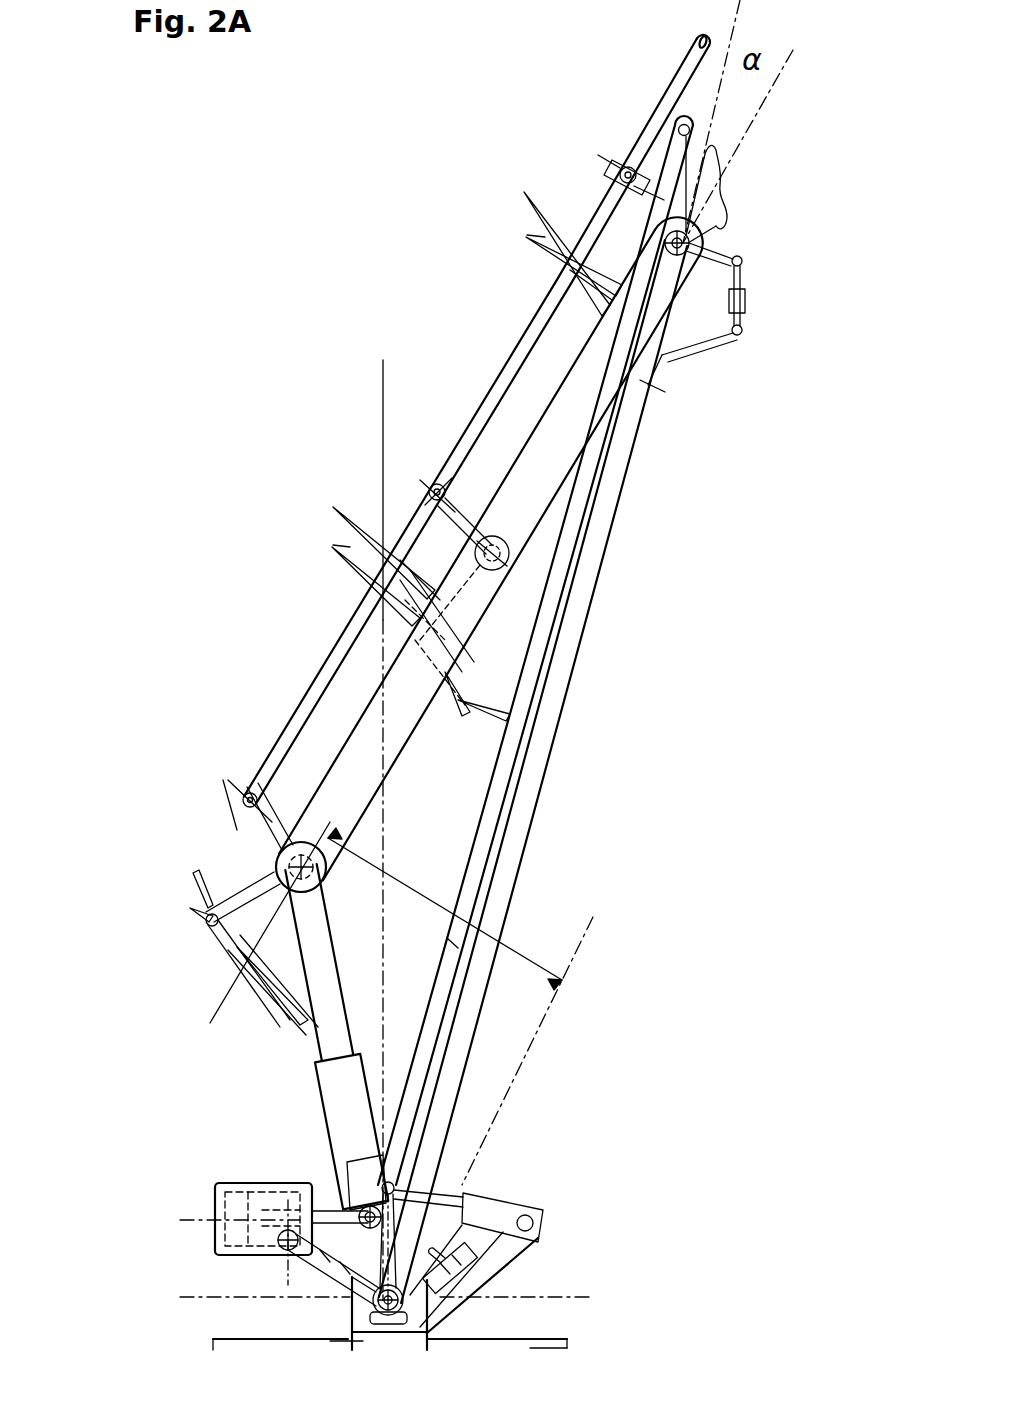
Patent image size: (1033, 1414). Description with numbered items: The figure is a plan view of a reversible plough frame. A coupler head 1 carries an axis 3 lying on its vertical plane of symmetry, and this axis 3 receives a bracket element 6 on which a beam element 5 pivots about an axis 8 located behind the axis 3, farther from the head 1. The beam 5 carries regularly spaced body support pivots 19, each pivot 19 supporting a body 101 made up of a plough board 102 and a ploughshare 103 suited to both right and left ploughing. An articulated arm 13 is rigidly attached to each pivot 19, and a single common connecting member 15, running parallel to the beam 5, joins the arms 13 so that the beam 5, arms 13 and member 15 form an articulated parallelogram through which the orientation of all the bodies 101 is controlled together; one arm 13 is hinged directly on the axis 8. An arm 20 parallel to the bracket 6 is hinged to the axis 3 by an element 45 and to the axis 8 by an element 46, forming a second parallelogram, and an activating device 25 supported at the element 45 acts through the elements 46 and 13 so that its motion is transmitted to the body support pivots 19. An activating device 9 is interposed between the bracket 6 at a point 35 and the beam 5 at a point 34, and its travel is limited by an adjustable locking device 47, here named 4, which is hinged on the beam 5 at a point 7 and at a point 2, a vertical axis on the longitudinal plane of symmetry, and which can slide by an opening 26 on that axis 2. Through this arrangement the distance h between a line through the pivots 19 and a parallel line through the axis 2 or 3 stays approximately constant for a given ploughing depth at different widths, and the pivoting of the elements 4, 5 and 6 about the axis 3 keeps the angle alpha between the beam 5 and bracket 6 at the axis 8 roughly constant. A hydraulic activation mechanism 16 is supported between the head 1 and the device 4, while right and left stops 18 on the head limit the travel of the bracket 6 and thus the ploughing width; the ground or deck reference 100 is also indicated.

The coupler head 1 is at (370, 1322).
The point 2 is at (510, 1297).
The axis 3 is at (388, 1300).
The locking device 4 is at (318, 1092).
The adjustable locking device 47 is at (319, 962).
The beam element 5 is at (572, 367).
The bracket element 6 is at (607, 509).
The point 7 is at (276, 858).
The axis 8 is at (692, 236).
The activating device 9 is at (748, 301).
The arm 13 is at (616, 172).
The connecting member 15 is at (305, 692).
The hydraulic activation mechanism 16 is at (227, 1185).
The stops 18 is at (445, 1240).
The body support pivots 19 is at (510, 553).
The arm 20 is at (552, 600).
The activating device 25 is at (500, 1207).
The opening 26 is at (380, 1120).
The point 34 is at (745, 259).
The point 35 is at (745, 333).
The element 45 is at (546, 1213).
The element 46 is at (668, 128).
The deck 100 is at (530, 1348).
The body 101 is at (400, 595).
The plough board 102 is at (360, 537).
The ploughshare 103 is at (343, 565).
The distance h is at (445, 909).